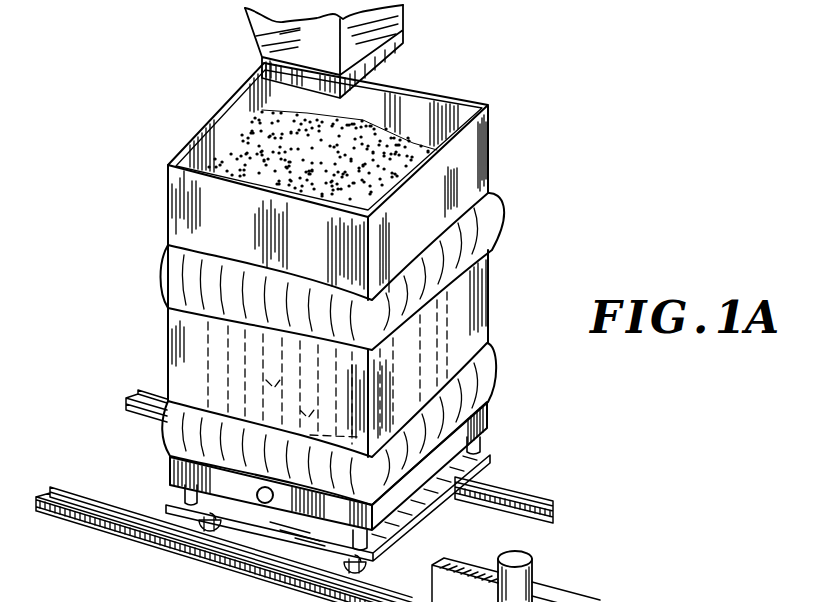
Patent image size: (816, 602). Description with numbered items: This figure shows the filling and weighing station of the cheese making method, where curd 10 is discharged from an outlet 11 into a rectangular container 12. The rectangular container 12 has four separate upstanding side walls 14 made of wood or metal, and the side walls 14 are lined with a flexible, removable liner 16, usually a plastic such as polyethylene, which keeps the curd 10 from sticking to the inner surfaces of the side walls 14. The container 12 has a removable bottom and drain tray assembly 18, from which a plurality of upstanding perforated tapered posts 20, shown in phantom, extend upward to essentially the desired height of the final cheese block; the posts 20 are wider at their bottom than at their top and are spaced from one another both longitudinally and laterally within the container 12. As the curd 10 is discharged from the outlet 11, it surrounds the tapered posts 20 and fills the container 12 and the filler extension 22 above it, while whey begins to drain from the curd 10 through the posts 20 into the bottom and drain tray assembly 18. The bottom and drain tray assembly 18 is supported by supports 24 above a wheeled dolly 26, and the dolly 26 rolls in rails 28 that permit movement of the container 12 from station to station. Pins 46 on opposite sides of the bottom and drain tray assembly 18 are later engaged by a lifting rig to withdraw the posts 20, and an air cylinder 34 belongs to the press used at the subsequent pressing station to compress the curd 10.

The curd 10 is at (368, 172).
The outlet 11 is at (400, 30).
The rectangular container 12 is at (492, 263).
The side walls 14 is at (180, 341).
The flexible removable liner 16 is at (172, 272).
The removable bottom and drain tray assembly 18 is at (167, 466).
The upstanding perforated tapered posts 20 is at (440, 345).
The filler extension 22 is at (177, 200).
The supports 24 is at (185, 493).
The wheeled dolly 26 is at (417, 523).
The rails 28 is at (124, 404).
The air cylinder 34 is at (530, 575).
The pins 46 is at (262, 504).